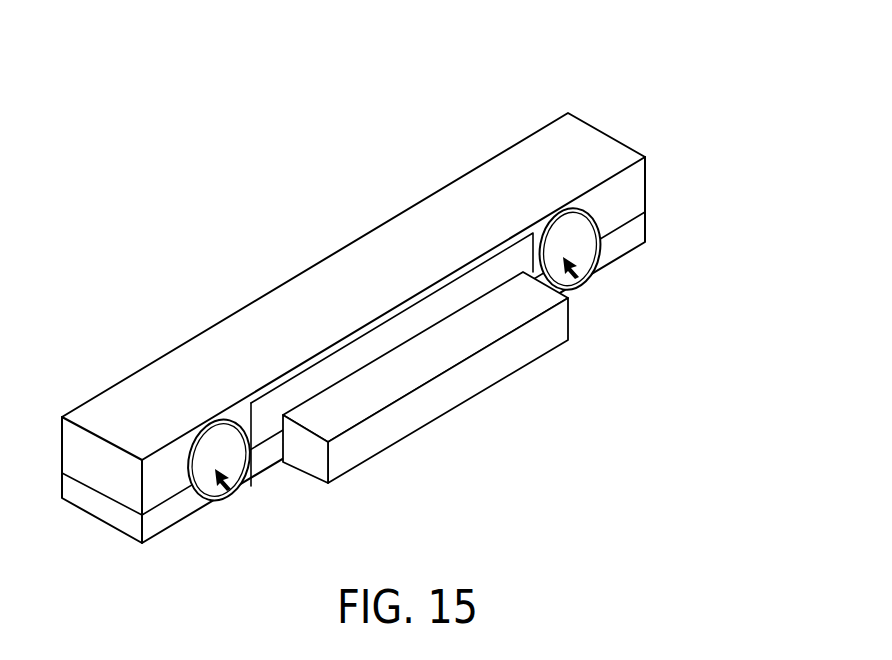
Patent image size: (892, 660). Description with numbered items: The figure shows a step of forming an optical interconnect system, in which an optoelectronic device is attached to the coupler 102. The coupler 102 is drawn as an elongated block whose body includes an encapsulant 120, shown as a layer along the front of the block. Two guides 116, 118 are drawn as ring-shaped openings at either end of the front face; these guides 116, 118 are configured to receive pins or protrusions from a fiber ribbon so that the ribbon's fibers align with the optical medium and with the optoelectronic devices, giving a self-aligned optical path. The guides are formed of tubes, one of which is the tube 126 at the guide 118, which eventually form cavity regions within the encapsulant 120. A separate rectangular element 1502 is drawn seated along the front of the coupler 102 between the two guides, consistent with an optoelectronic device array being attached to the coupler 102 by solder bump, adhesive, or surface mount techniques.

The coupler 102 is at (578, 147).
The encapsulant 120 is at (631, 199).
The guide 116 is at (233, 488).
The guide 118 is at (583, 281).
The tube 126 is at (602, 240).
The insert block 1502 is at (518, 352).